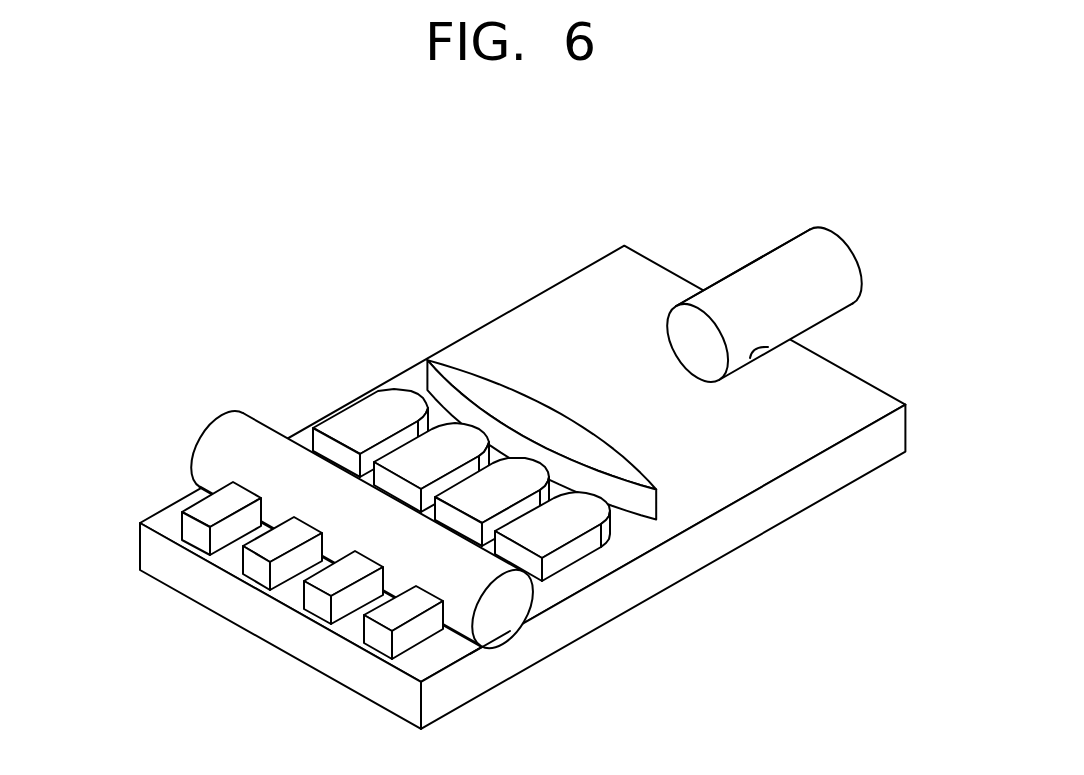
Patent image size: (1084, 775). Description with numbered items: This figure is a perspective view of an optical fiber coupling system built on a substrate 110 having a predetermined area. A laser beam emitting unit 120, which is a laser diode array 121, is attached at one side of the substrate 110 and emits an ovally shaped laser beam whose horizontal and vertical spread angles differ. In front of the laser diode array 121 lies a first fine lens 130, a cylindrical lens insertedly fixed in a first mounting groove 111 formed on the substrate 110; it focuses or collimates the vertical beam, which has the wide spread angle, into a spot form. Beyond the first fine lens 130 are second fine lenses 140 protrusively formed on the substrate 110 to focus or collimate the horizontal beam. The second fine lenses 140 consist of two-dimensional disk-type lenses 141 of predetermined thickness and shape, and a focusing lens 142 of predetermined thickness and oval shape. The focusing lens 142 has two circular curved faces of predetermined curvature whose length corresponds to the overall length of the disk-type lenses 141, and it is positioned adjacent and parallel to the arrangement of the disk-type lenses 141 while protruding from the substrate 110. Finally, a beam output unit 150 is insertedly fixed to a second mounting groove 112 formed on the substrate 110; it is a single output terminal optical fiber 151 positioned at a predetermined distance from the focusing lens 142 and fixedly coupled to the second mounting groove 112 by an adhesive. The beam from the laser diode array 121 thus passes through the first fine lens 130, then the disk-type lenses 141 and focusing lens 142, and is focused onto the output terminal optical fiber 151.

The substrate 110 is at (578, 260).
The first mounting groove 111 is at (500, 647).
The second mounting groove 112 is at (775, 349).
The laser beam emitting unit 120 is at (289, 570).
The laser diode array 121 is at (258, 578).
The first fine lens 130 is at (227, 406).
The second fine lenses 140 is at (479, 424).
The disk-type lenses 141 is at (550, 505).
The focusing lens 142 is at (468, 378).
The beam output unit 150 is at (748, 258).
The output terminal optical fiber 151 is at (810, 250).